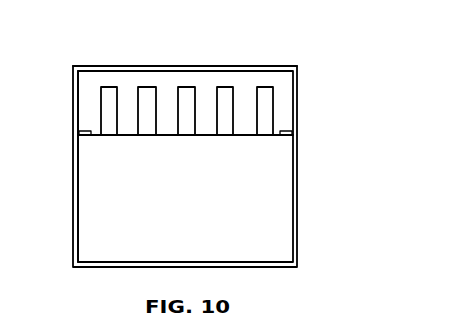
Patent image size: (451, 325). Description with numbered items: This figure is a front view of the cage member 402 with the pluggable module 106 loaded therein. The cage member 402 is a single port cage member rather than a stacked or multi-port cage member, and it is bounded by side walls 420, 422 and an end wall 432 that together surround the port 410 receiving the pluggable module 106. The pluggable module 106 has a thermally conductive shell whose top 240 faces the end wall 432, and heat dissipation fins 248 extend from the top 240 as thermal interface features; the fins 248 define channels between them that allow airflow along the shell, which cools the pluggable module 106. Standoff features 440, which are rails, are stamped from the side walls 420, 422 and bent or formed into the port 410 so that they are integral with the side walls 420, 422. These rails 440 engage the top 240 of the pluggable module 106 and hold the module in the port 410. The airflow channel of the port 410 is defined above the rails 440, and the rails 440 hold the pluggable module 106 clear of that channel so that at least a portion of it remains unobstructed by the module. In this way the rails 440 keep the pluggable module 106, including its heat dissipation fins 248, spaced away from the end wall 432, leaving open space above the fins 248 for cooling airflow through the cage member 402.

The cage member 402 is at (312, 54).
The side wall 422 is at (300, 222).
The side wall 420 is at (77, 188).
The end wall 432 is at (199, 66).
The top 240 is at (278, 134).
The port 410 is at (84, 92).
The heat dissipation fins 248 is at (268, 93).
The standoff features 440 is at (85, 128).
The pluggable module 106 is at (274, 185).